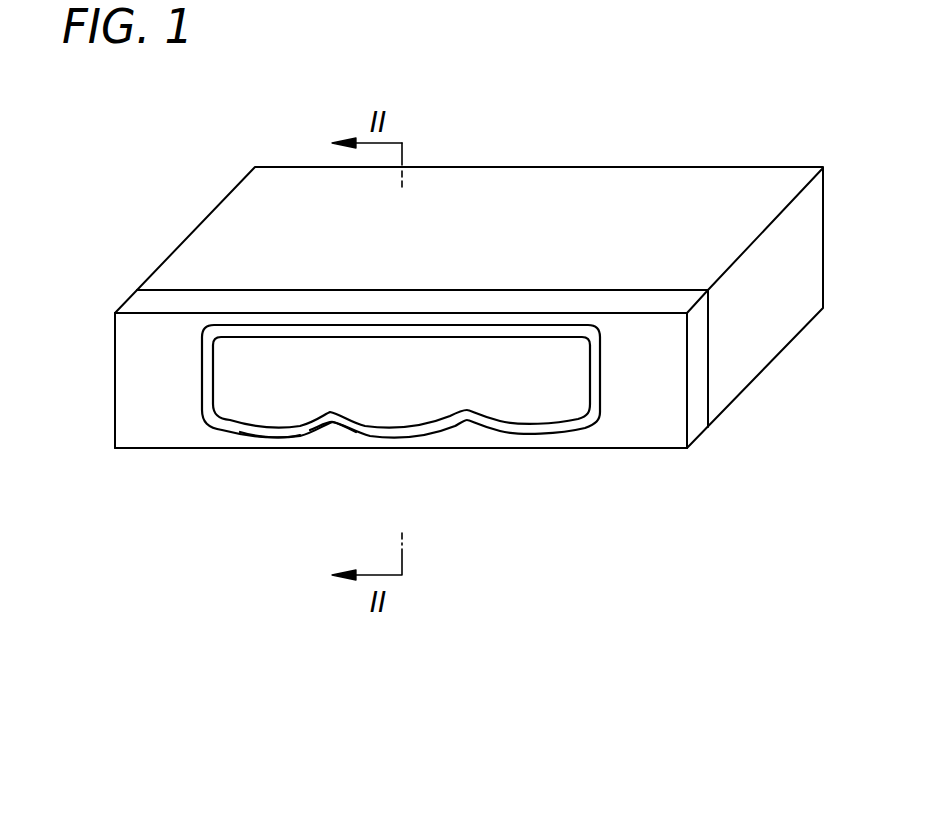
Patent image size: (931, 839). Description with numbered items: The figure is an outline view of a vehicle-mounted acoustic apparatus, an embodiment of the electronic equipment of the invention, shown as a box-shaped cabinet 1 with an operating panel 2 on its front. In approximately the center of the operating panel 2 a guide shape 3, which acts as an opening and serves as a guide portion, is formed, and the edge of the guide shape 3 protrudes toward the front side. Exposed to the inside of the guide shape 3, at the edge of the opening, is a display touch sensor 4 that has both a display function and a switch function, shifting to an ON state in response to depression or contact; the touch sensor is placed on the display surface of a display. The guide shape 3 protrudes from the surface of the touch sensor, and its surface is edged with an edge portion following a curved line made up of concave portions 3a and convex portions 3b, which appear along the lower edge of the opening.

The cabinet 1 is at (547, 197).
The operating panel 2 is at (143, 365).
The guide shape 3 is at (235, 428).
The concave portions 3a is at (274, 432).
The convex portions 3b is at (328, 420).
The display touch sensor 4 is at (538, 398).